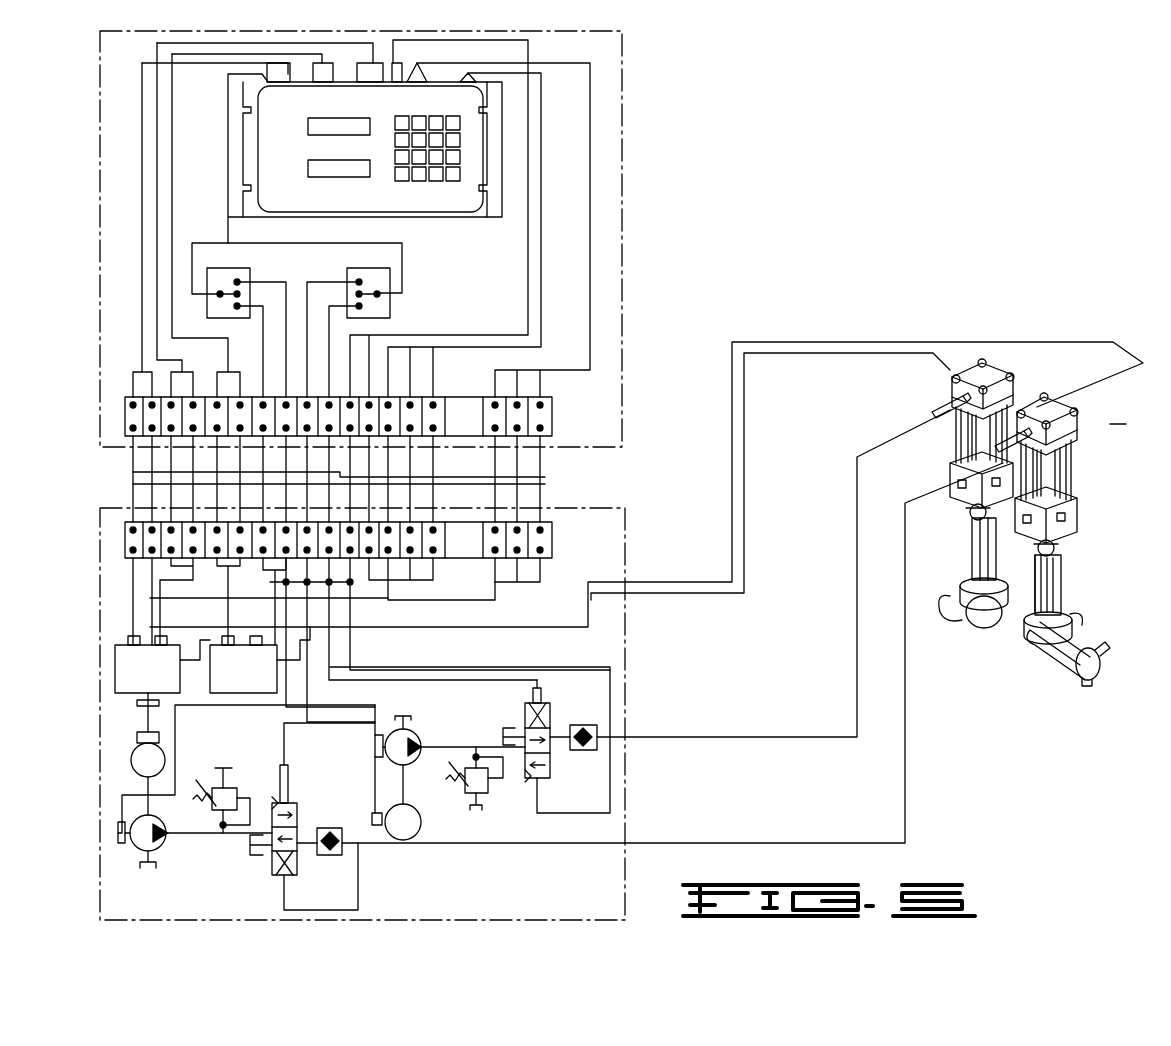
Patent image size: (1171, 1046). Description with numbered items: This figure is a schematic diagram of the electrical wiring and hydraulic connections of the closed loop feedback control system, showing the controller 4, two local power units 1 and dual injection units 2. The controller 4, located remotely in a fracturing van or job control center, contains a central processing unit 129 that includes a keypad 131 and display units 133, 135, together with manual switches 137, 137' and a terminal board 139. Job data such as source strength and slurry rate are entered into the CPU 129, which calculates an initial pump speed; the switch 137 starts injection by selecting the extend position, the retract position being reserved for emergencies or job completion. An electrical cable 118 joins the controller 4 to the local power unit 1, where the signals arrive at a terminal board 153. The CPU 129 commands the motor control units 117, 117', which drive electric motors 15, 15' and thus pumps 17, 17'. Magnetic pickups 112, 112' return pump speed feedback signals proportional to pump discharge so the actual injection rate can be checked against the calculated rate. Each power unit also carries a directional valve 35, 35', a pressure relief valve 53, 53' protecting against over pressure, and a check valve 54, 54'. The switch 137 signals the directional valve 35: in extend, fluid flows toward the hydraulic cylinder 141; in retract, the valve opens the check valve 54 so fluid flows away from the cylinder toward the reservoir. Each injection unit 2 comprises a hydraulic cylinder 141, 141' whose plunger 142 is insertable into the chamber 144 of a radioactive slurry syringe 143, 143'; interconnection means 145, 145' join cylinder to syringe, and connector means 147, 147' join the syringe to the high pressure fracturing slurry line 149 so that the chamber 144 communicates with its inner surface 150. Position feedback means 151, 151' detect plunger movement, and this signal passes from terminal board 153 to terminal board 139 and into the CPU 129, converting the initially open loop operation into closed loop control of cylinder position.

The local power unit 1 is at (98, 606).
The injection unit 2 is at (1118, 413).
The controller 4 is at (95, 97).
The electric motor 15 is at (97, 754).
The electric motor 15' is at (420, 820).
The pump 17 is at (106, 845).
The pump 17' is at (429, 733).
The directional valve 35 is at (270, 816).
The directional valve 35' is at (502, 740).
The pressure relief valve 53 is at (199, 831).
The pressure relief valve 53' is at (487, 791).
The check valve 54 is at (650, 682).
The check valve 54' is at (750, 595).
The magnetic pickup 112 is at (198, 774).
The magnetic pickup 112' is at (341, 759).
The motor control unit 117 is at (102, 664).
The motor control unit 117' is at (321, 661).
The electrical cable 118 is at (545, 479).
The central processing unit 129 is at (502, 175).
The keypad 131 is at (502, 140).
The display unit 133 is at (350, 118).
The display unit 135 is at (355, 178).
The manual switch 137 is at (128, 293).
The manual switch 137' is at (415, 293).
The terminal board 139 is at (125, 412).
The hydraulic cylinder 141 is at (1079, 468).
The hydraulic cylinder 141' is at (951, 433).
The plunger 142 is at (1062, 560).
The radioactive slurry syringe 143 is at (1087, 585).
The radioactive slurry syringe 143' is at (949, 549).
The chamber 144 is at (1046, 594).
The interconnection means 145 is at (1089, 534).
The interconnection means 145' is at (946, 513).
The fracture slurry line connector means 147 is at (1084, 628).
The fracture slurry line connector means 147' is at (955, 593).
The fracturing slurry line 149 is at (1060, 665).
The inner surface 150 is at (1092, 668).
The position feedback means 151 is at (1069, 447).
The position feedback means 151' is at (916, 391).
The terminal board 153 is at (125, 547).